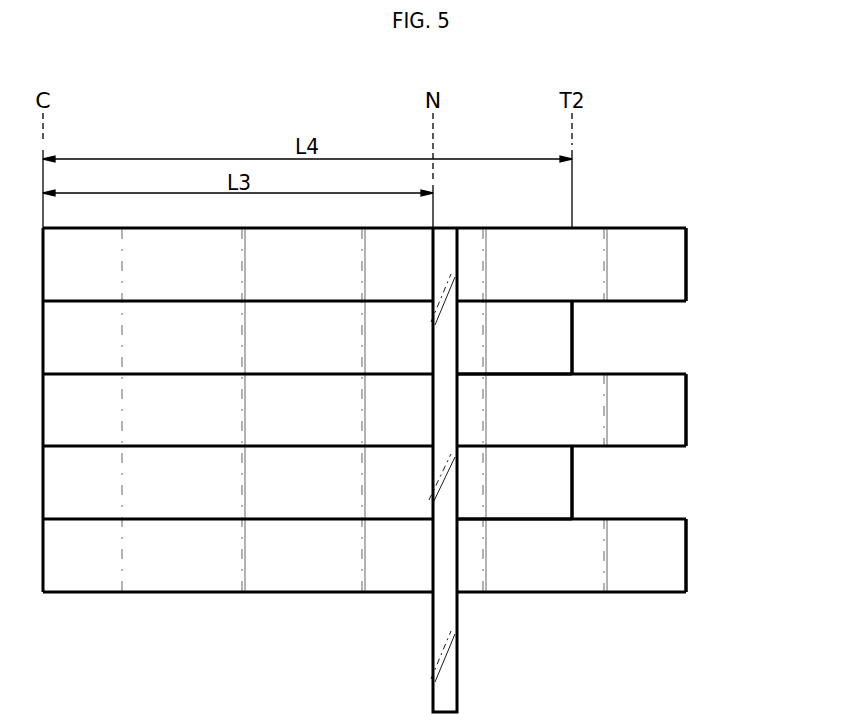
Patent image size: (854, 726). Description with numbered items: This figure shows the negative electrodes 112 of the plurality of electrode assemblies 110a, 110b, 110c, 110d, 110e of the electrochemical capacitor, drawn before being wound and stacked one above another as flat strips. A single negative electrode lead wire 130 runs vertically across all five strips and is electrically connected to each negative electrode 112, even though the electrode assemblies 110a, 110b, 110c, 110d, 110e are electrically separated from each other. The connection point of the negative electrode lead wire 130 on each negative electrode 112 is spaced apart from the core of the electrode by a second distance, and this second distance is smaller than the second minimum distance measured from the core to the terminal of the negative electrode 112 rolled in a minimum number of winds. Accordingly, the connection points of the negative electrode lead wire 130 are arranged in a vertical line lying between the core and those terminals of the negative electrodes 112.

The electrode assembly 110a is at (676, 267).
The electrode assembly 110b is at (563, 339).
The electrode assembly 110c is at (676, 410).
The electrode assembly 110d is at (563, 482).
The electrode assembly 110e is at (676, 555).
The negative electrode 112 is at (676, 267).
The negative electrode lead wire 130 is at (455, 676).